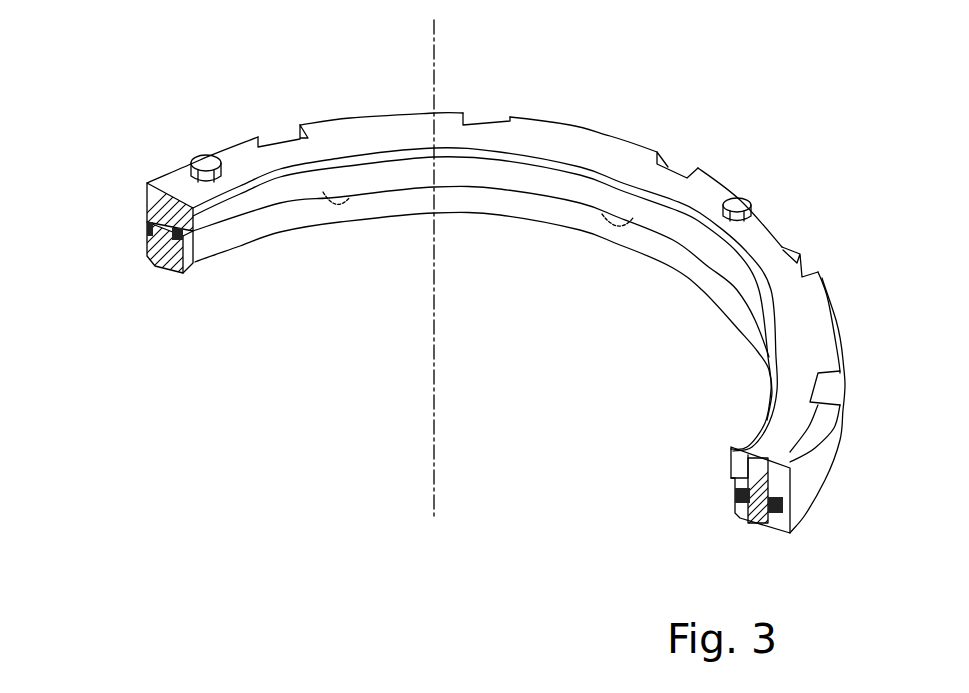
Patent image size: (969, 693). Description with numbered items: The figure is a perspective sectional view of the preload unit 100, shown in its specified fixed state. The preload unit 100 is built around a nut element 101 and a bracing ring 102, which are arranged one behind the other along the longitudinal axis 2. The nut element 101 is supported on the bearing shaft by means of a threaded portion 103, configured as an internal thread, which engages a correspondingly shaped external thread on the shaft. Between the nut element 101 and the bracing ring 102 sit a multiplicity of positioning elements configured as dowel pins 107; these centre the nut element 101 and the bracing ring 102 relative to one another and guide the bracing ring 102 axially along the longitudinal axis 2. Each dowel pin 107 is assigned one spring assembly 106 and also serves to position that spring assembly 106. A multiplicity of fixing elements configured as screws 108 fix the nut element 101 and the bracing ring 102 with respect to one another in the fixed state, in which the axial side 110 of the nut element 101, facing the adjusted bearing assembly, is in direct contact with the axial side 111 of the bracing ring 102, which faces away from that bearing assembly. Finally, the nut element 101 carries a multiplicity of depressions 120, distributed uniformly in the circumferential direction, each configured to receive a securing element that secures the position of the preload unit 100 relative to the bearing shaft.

The longitudinal axis 2 is at (438, 46).
The preload unit 100 is at (146, 139).
The nut element 101 is at (627, 155).
The bracing ring 102 is at (160, 243).
The threaded portion 103 is at (743, 287).
The spring assembly 106 is at (783, 507).
The dowel pin 107 is at (793, 481).
The screw 108 is at (207, 153).
The axial side 110 is at (147, 235).
The axial side 111 is at (193, 233).
The depression 120 is at (683, 171).